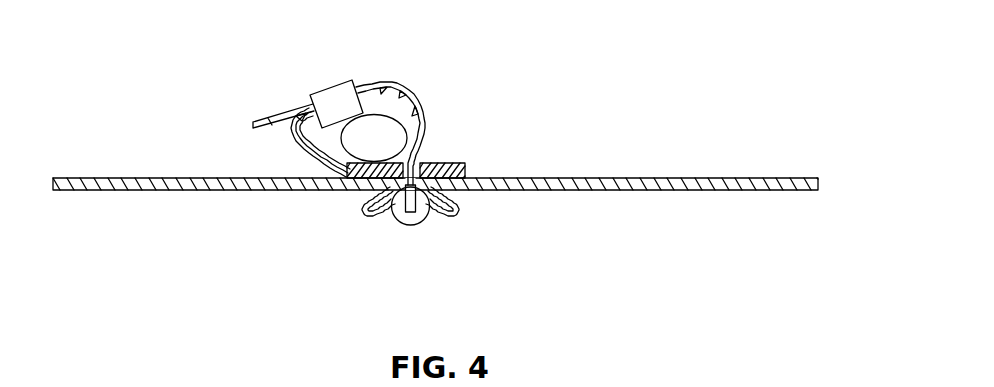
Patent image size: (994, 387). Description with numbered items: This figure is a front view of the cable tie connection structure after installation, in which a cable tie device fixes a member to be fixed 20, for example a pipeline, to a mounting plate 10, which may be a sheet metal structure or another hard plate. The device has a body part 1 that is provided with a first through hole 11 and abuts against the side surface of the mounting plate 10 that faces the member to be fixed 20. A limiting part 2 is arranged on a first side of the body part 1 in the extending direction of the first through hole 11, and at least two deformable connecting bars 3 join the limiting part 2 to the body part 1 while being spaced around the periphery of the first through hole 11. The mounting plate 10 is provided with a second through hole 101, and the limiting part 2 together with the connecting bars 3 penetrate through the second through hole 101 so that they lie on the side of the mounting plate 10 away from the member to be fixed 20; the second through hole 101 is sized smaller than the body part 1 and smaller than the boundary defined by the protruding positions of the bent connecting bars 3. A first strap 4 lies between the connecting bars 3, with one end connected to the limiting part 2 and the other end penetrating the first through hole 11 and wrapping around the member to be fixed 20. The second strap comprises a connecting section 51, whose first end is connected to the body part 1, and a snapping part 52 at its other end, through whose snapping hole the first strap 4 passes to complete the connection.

The body part 1 is at (464, 165).
The limiting part 2 is at (411, 218).
The connecting bars 3 is at (451, 212).
The first strap 4 is at (424, 118).
The mounting plate 10 is at (563, 190).
The first through hole 11 is at (430, 163).
The member to be fixed 20 is at (375, 132).
The connecting section 51 is at (285, 137).
The snapping part 52 is at (340, 103).
The second through hole 101 is at (372, 182).